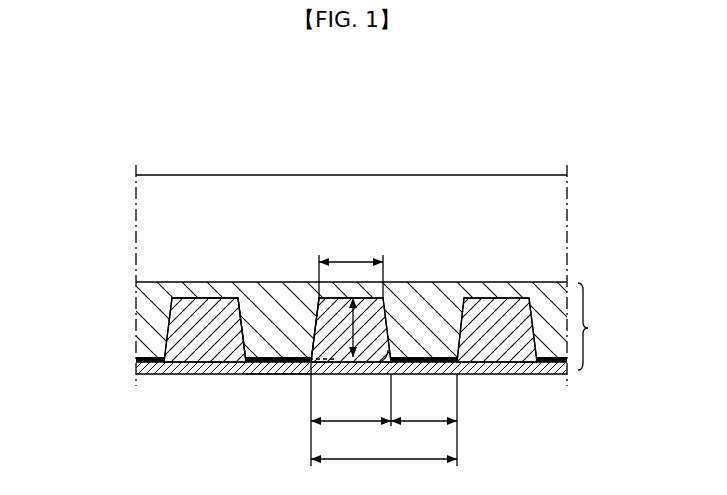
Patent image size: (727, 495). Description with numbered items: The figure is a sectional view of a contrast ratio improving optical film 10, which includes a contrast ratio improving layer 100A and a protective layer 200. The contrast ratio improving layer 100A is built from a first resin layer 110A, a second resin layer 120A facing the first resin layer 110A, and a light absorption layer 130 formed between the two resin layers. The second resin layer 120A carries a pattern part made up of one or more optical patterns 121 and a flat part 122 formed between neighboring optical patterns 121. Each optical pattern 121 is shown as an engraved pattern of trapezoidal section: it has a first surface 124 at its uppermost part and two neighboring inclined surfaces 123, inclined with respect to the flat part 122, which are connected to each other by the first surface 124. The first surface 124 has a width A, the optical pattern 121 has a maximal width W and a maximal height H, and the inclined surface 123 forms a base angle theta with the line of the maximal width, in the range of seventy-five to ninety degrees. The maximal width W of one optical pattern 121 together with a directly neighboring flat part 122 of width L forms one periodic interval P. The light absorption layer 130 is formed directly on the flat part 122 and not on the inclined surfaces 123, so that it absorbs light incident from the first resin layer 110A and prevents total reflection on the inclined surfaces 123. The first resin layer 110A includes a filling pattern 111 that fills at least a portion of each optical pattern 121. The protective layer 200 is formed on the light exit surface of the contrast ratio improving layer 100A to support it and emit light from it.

The contrast ratio improving optical film 10 is at (506, 146).
The protective layer 200 is at (557, 210).
The contrast ratio improving layer 100A is at (344, 294).
The second resin layer 120A is at (137, 325).
The first resin layer 110A is at (137, 366).
The light absorption layer 130 is at (312, 358).
The filling pattern 111 is at (192, 333).
The optical pattern 121 is at (236, 322).
The flat part 122 is at (272, 368).
The inclined surface 123 is at (328, 337).
The first surface 124 is at (208, 297).